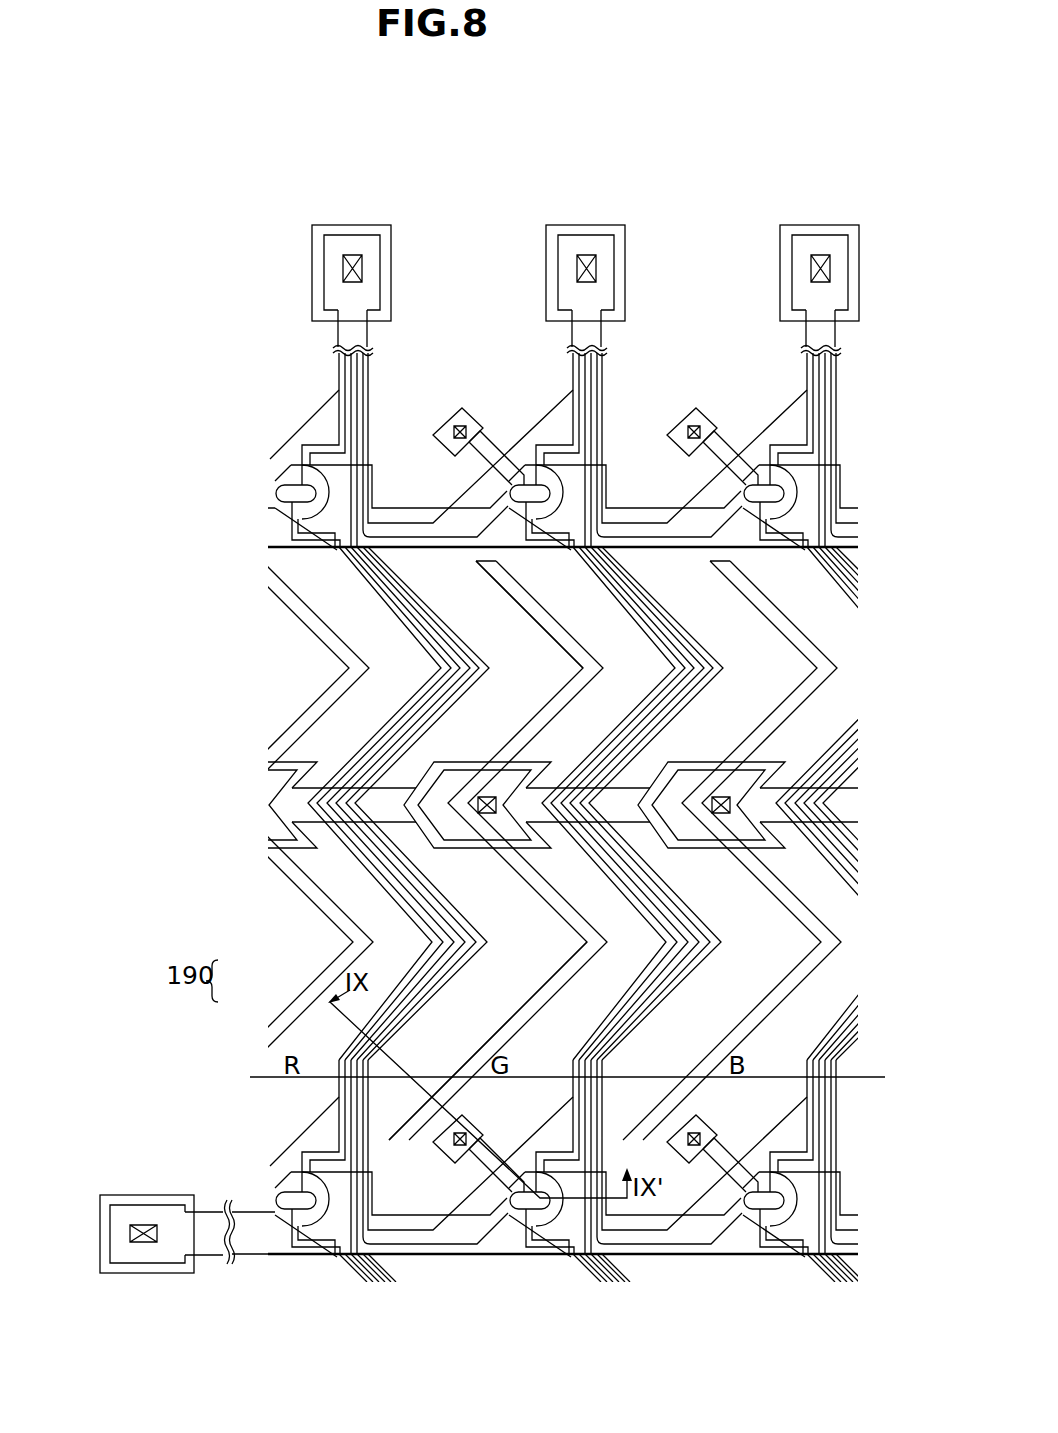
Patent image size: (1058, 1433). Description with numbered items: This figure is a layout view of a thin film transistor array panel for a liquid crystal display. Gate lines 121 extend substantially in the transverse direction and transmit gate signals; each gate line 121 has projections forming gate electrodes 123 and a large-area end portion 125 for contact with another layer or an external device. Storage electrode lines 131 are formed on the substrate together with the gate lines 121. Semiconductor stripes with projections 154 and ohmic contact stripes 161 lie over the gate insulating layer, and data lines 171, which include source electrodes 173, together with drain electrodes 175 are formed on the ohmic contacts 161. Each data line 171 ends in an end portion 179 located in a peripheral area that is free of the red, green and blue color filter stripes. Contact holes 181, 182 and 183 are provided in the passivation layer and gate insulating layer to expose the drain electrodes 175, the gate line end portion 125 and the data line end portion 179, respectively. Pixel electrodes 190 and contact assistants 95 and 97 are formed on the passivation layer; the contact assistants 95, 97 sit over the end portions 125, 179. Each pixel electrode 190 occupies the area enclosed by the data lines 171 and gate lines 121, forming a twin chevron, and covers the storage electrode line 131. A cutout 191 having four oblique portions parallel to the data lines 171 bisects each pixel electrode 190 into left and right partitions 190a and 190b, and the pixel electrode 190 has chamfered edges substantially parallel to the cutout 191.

The contact assistant 95 is at (100, 1262).
The contact assistant 97 is at (628, 249).
The gate line 121 is at (455, 1257).
The gate electrode 123 is at (495, 1262).
The end portion 125 is at (143, 1273).
The storage electrode line 131 is at (857, 790).
The projection 154 is at (522, 1262).
The ohmic contact stripe 161 is at (705, 925).
The data line 171 is at (648, 985).
The source electrode 173 is at (545, 1152).
The drain electrode 175 is at (477, 1125).
The end portion 179 is at (616, 271).
The contact hole 181 is at (458, 1128).
The contact hole 182 is at (137, 1222).
The contact hole 183 is at (588, 250).
The pixel electrode 190 is at (650, 870).
The left partition 190a is at (555, 993).
The right partition 190b is at (578, 942).
The cutout 191 is at (505, 1023).